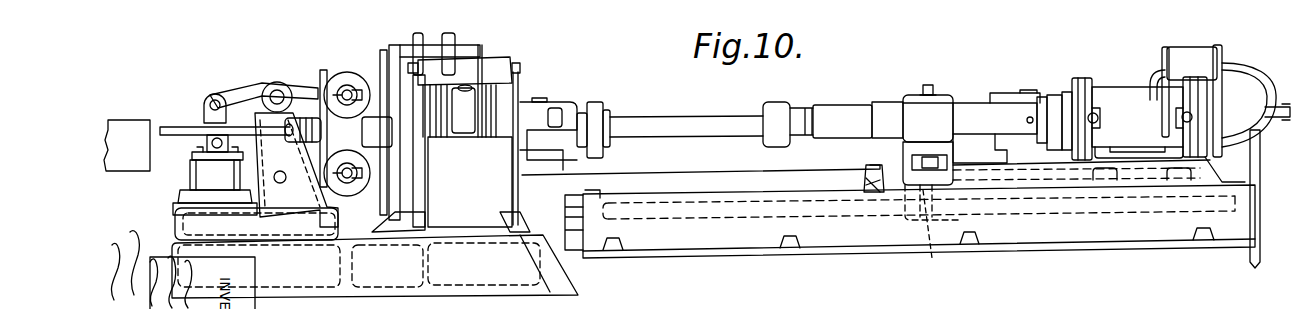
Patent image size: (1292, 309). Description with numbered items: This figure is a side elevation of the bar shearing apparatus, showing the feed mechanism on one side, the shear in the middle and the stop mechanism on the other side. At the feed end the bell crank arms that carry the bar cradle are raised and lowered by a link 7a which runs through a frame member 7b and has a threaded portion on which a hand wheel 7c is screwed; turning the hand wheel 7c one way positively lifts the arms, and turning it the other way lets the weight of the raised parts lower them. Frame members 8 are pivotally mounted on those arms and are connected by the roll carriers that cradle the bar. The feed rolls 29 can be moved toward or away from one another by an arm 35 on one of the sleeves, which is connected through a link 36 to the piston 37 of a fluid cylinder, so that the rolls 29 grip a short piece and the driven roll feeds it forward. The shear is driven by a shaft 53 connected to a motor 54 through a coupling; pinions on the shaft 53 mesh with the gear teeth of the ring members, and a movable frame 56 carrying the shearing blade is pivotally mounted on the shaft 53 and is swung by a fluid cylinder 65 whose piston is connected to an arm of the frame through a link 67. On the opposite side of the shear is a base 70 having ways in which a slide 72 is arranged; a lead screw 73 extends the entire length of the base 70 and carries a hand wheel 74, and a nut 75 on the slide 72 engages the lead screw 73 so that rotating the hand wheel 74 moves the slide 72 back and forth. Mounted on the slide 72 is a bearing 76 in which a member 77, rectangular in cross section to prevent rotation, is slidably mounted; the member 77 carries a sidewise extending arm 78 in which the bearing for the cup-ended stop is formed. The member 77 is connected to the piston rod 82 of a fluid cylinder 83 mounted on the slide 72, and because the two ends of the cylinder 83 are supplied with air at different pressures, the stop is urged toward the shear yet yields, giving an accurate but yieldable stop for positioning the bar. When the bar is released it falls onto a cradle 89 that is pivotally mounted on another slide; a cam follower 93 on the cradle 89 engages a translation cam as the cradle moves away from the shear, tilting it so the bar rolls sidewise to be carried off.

The link 7a is at (184, 136).
The frame member 7b is at (296, 142).
The hand wheel 7c is at (323, 70).
The frame members 8 is at (127, 147).
The rolls 29 is at (358, 75).
The arm 35 is at (244, 84).
The link 36 is at (206, 112).
The piston 37 is at (193, 173).
The shaft 53 is at (707, 123).
The motor 54 is at (1197, 57).
The movable frame 56 is at (483, 56).
The fluid cylinder 65 is at (460, 130).
The link 67 is at (519, 97).
The base 70 is at (847, 240).
The slide 72 is at (987, 162).
The lead screw 73 is at (736, 210).
The hand wheel 74 is at (1250, 265).
The nut 75 is at (933, 236).
The bearing 76 is at (915, 98).
The member 77 is at (883, 108).
The sidewise extending arm 78 is at (838, 110).
The piston rod 82 is at (1012, 120).
The fluid cylinder 83 is at (1133, 108).
The cradle 89 is at (688, 182).
The cam follower 93 is at (870, 177).